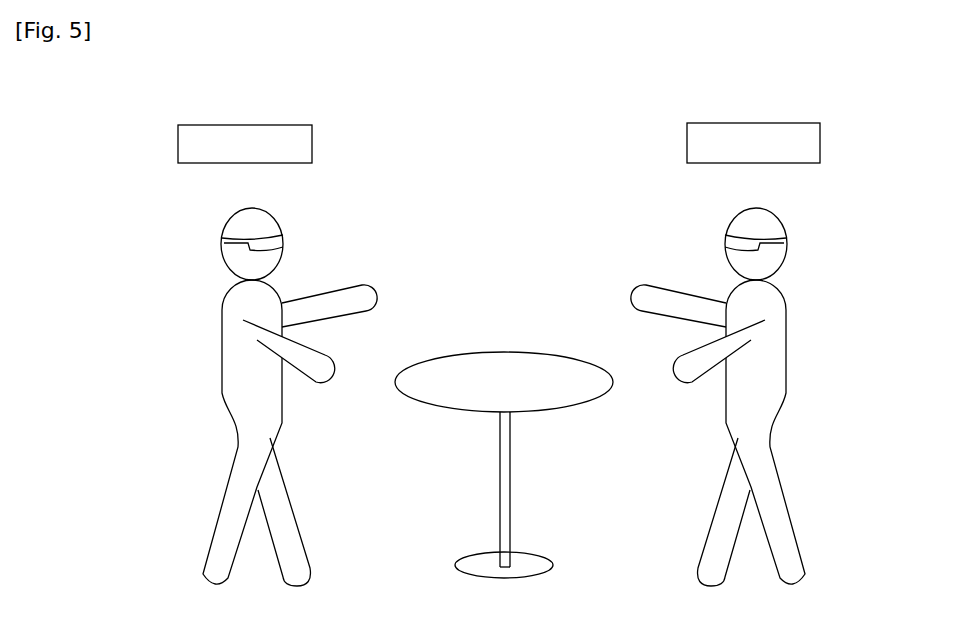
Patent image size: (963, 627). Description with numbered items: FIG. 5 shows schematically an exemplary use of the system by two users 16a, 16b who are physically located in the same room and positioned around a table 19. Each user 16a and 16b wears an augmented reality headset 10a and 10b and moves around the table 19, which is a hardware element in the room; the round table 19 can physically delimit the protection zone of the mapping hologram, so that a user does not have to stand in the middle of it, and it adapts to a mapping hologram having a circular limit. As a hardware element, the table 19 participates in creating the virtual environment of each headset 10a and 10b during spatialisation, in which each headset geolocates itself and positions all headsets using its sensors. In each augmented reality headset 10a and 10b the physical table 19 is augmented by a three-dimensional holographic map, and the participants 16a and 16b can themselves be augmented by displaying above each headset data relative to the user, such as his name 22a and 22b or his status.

The augmented reality headset 10a is at (707, 246).
The augmented reality headset 10b is at (303, 248).
The user 16a is at (810, 377).
The user 16b is at (198, 380).
The table 19 is at (505, 578).
The name 22a is at (820, 143).
The name 22b is at (178, 143).